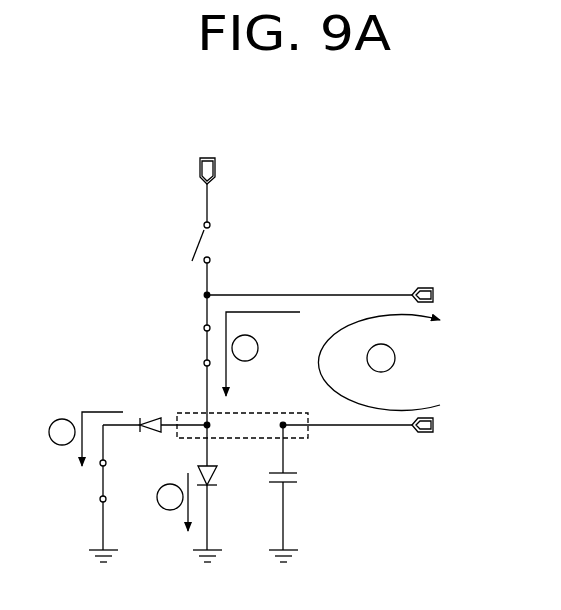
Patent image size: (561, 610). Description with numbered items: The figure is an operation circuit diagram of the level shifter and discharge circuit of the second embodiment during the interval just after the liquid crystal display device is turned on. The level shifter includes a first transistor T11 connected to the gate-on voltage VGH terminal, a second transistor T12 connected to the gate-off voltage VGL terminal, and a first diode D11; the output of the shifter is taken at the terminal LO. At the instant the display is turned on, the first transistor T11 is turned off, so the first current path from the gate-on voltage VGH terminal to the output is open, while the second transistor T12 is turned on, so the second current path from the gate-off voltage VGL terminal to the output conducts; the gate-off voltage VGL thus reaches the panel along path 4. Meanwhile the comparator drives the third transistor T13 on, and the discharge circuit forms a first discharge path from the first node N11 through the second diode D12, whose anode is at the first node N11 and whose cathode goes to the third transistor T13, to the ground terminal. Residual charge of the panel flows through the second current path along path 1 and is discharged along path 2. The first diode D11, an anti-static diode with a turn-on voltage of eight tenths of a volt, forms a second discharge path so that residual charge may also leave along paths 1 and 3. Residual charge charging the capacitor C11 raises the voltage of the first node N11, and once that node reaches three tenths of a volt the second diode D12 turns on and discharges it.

The gate-on voltage VGH is at (207, 160).
The gate-off voltage VGL is at (379, 425).
The output terminal LO is at (336, 295).
The first transistor T11 is at (216, 242).
The second transistor T12 is at (190, 345).
The third transistor T13 is at (117, 487).
The first diode D11 is at (224, 477).
The second diode D12 is at (155, 411).
The capacitor C11 is at (298, 487).
The first node N11 is at (277, 412).
The path 1 is at (263, 354).
The path 2 is at (86, 439).
The path 3 is at (172, 502).
The path 4 is at (379, 362).